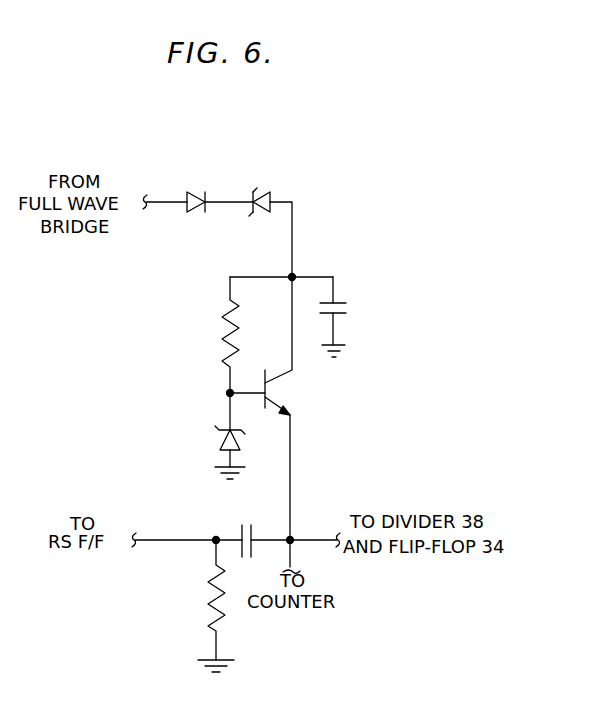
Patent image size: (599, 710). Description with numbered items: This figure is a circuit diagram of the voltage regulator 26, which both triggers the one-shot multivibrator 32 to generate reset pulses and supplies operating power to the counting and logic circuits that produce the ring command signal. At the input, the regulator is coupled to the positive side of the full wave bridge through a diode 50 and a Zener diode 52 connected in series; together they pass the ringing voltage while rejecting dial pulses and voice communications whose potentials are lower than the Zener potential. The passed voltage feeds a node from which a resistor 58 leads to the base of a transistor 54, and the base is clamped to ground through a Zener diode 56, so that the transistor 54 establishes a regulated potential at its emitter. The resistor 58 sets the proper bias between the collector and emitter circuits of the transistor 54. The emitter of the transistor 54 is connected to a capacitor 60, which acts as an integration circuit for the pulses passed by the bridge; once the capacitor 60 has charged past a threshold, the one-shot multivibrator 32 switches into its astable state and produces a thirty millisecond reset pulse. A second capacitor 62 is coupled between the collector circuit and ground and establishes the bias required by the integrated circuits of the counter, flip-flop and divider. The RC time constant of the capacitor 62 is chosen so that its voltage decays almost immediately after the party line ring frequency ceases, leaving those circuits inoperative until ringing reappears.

The voltage regulator 26 is at (337, 252).
The diode 50 is at (197, 192).
The Zener diode 52 is at (268, 190).
The transistor 54 is at (283, 396).
The Zener diode 56 is at (217, 437).
The resistor 58 is at (219, 318).
The capacitor 60 is at (248, 519).
The second capacitor 62 is at (350, 313).
The one-shot multivibrator 32 is at (79, 565).